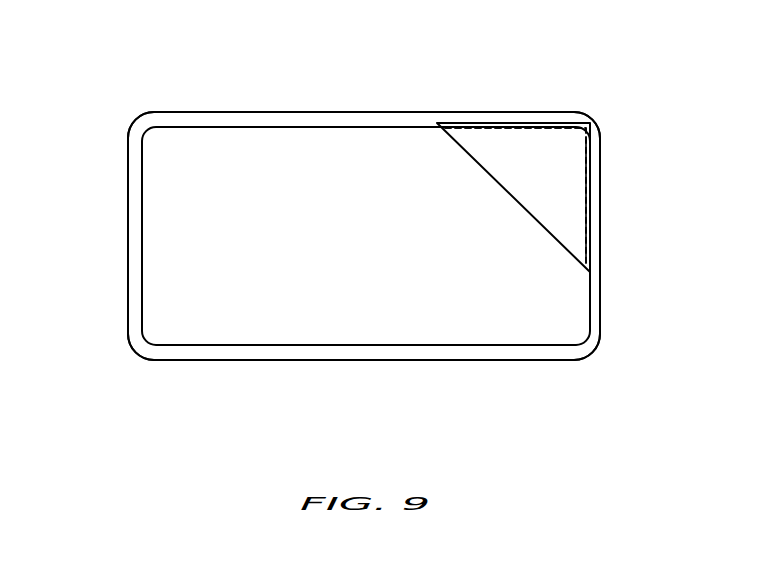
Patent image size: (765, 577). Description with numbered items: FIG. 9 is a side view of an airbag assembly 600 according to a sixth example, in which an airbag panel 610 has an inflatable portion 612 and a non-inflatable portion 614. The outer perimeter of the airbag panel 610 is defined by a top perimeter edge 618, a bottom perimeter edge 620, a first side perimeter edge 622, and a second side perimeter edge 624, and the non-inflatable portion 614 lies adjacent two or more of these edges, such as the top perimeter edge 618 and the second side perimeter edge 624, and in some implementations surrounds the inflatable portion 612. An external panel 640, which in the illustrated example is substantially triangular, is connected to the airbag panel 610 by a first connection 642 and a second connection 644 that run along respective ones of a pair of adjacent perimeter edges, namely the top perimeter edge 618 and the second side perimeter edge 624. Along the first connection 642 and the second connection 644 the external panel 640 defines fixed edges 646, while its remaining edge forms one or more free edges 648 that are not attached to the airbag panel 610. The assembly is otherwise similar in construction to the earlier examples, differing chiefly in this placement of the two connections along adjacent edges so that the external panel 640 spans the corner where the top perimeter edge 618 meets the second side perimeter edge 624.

The airbag assembly 600 is at (121, 59).
The airbag panel 610 is at (128, 169).
The inflatable portion 612 is at (150, 206).
The non-inflatable portion 614 is at (138, 245).
The top perimeter edge 618 is at (216, 112).
The bottom perimeter edge 620 is at (184, 360).
The first side perimeter edge 622 is at (128, 280).
The second side perimeter edge 624 is at (600, 322).
The external panel 640 is at (590, 154).
The first connection 642 is at (529, 127).
The second connection 644 is at (587, 186).
The fixed edges 646 is at (487, 123).
The free edges 648 is at (500, 185).